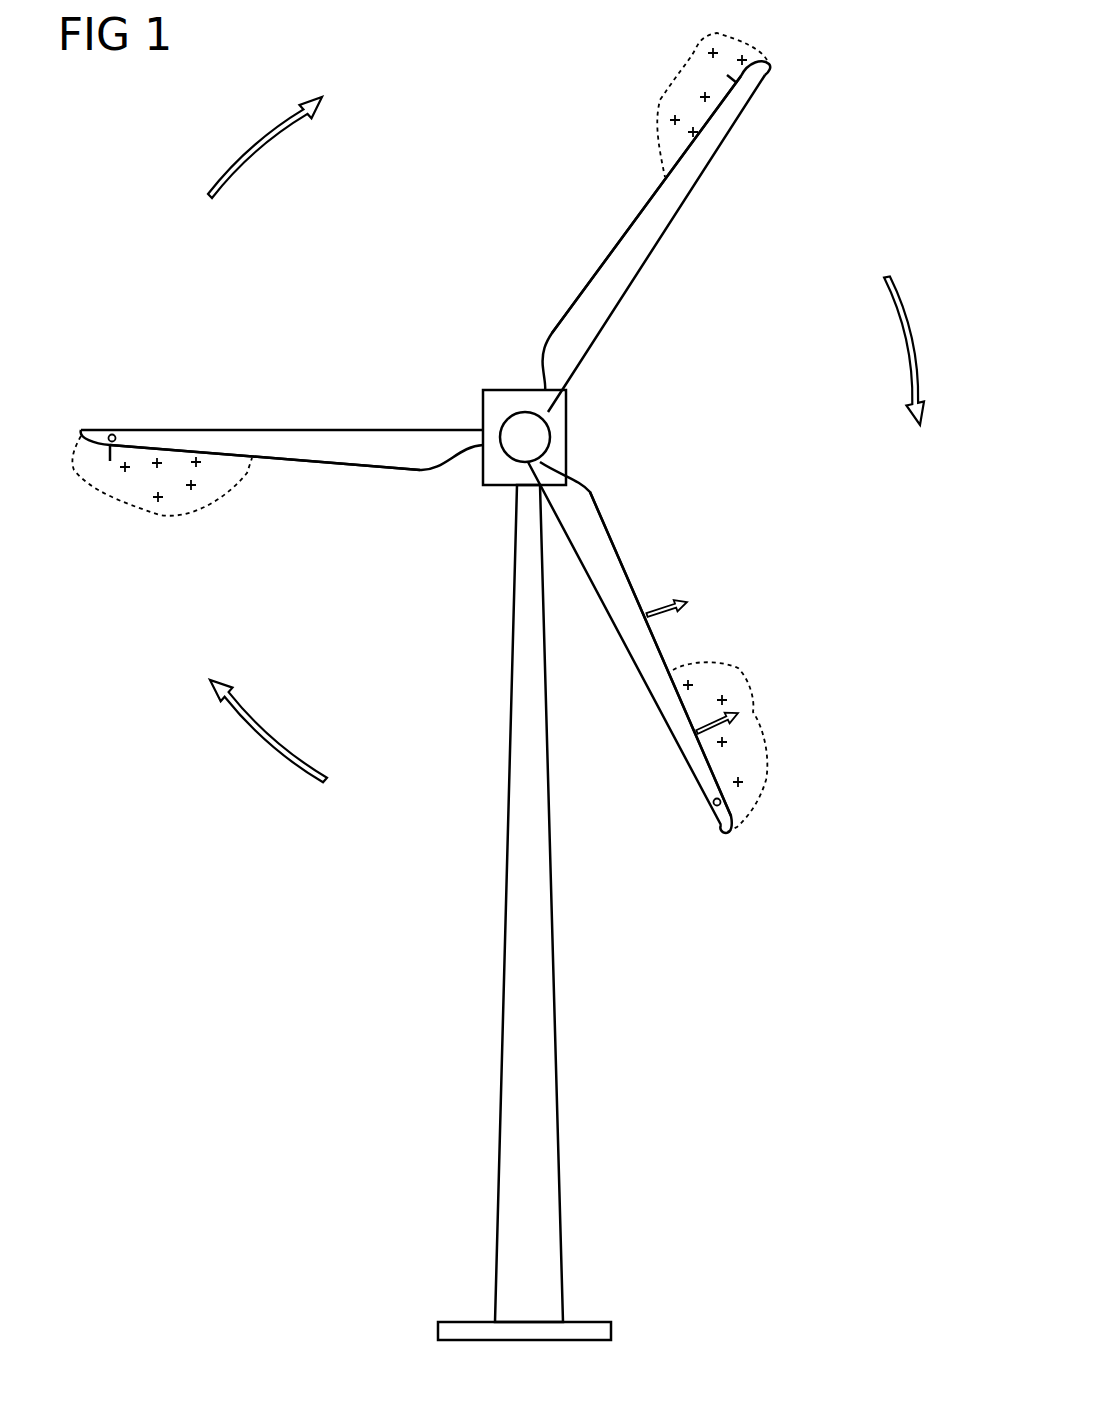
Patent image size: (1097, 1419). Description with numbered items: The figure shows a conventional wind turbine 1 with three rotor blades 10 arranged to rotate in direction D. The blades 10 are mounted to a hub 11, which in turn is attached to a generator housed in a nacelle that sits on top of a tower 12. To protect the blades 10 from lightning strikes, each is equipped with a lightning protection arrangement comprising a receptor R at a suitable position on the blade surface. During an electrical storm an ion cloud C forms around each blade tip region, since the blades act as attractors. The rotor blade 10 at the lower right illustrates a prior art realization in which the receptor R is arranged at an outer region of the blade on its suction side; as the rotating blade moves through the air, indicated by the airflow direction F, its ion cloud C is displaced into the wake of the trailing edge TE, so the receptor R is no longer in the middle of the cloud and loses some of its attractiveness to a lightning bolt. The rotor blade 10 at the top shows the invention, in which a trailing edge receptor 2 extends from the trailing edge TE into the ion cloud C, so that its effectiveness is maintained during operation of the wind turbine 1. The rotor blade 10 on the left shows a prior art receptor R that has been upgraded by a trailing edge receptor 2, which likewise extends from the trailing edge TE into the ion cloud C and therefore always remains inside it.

The wind turbine 1 is at (443, 225).
The trailing edge receptor 2 is at (110, 462).
The rotor blade 10 is at (385, 440).
The hub 11 is at (512, 422).
The tower 12 is at (549, 1058).
The trailing edge TE is at (298, 464).
The ion cloud C is at (183, 517).
The receptor R is at (112, 435).
The direction of the airflow F is at (656, 605).
The direction of rotation D is at (283, 749).